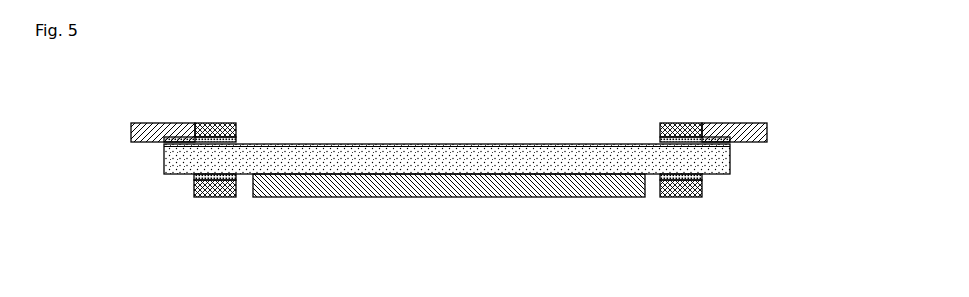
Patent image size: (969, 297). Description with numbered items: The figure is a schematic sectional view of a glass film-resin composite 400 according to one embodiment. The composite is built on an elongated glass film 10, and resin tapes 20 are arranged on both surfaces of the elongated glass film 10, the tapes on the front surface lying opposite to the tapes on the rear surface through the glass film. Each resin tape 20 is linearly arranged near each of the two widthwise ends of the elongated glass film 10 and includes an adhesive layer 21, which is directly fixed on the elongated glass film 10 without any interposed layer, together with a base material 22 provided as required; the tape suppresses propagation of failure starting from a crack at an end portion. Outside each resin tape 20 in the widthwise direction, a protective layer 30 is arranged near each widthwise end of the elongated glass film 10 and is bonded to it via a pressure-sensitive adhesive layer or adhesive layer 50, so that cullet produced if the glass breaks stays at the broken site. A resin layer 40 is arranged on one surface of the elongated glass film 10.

The glass film-resin composite 400 is at (845, 74).
The elongated glass film 10 is at (731, 170).
The adhesive layer 50 is at (164, 146).
The protective layer 30 is at (131, 123).
The adhesive layer 21 is at (236, 140).
The base material 22 is at (236, 125).
The resin tape 20 is at (326, 100).
The resin layer 40 is at (315, 197).